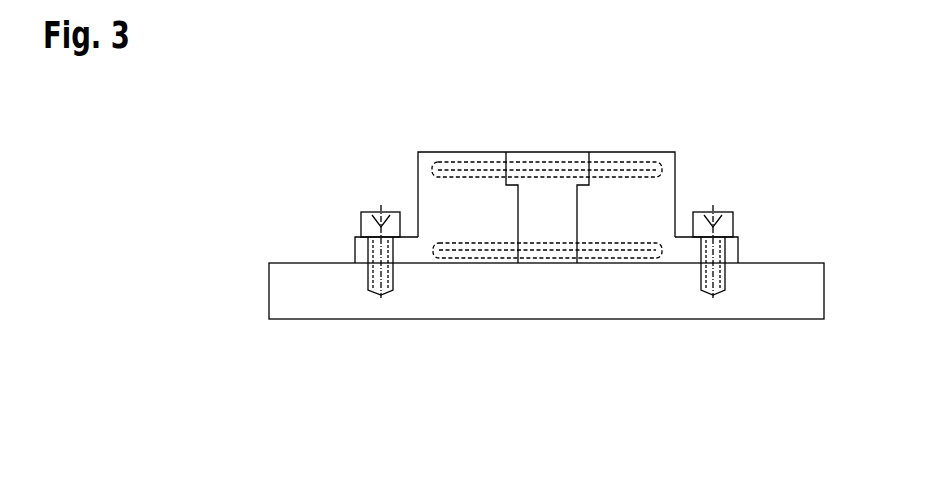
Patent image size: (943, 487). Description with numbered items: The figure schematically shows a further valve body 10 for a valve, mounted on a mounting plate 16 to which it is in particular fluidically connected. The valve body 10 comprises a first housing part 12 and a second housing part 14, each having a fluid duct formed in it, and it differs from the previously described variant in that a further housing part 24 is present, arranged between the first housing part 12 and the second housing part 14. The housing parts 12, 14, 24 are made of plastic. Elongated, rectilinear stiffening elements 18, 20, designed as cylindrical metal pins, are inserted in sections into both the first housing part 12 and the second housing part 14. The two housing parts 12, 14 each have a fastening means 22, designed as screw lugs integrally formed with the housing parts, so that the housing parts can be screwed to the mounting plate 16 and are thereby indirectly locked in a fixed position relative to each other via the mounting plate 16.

The valve body 10 is at (762, 105).
The first housing part 12 is at (440, 193).
The second housing part 14 is at (647, 195).
The mounting plate 16 is at (303, 298).
The stiffening element 18 is at (497, 248).
The stiffening element 20 is at (527, 170).
The fastening means 22 is at (360, 252).
The further housing part 24 is at (547, 218).